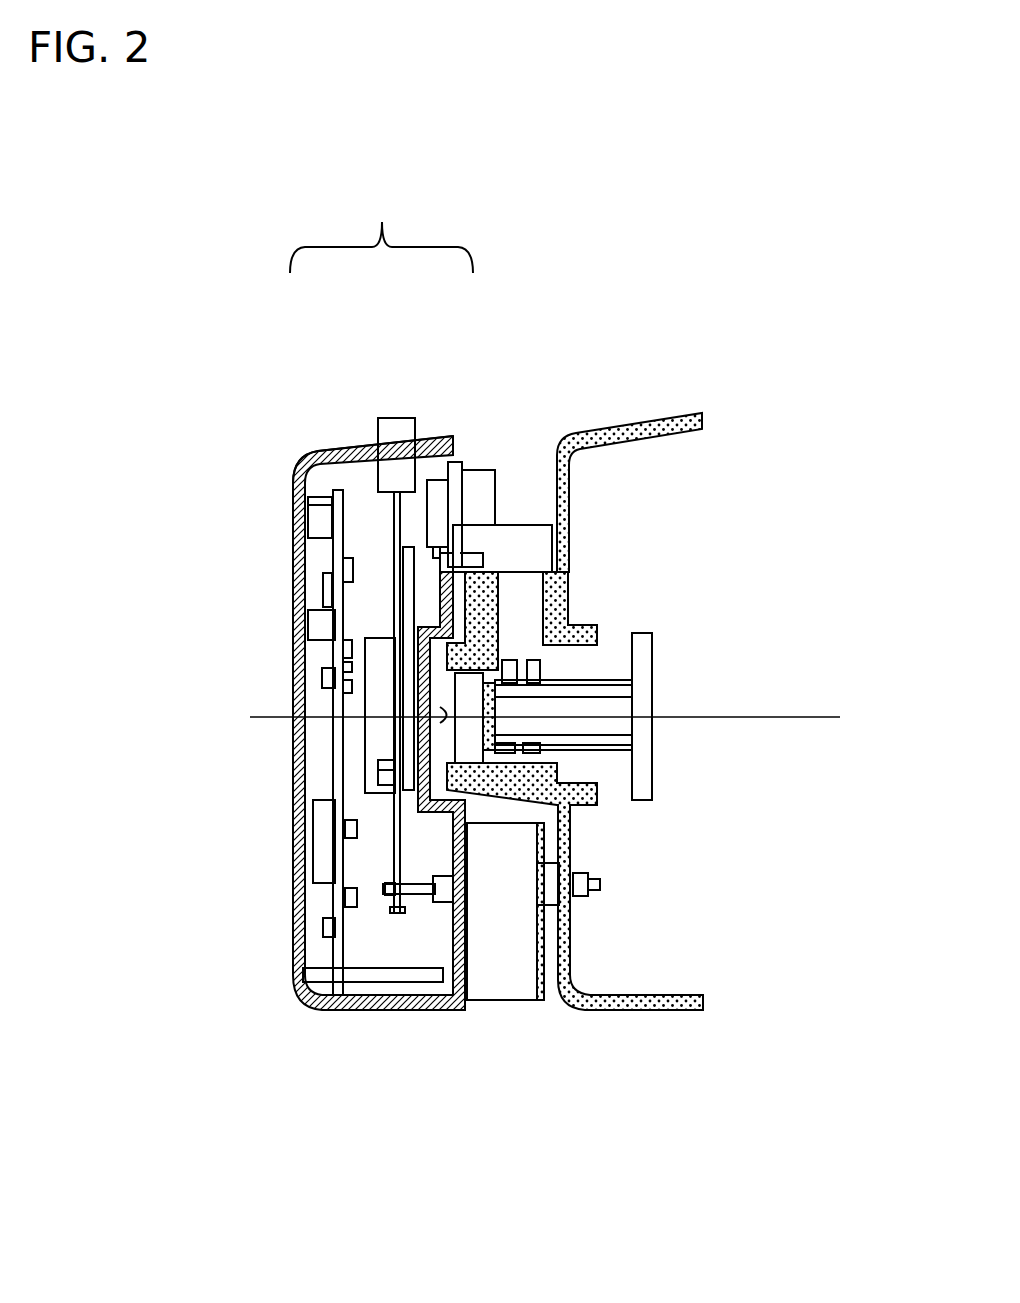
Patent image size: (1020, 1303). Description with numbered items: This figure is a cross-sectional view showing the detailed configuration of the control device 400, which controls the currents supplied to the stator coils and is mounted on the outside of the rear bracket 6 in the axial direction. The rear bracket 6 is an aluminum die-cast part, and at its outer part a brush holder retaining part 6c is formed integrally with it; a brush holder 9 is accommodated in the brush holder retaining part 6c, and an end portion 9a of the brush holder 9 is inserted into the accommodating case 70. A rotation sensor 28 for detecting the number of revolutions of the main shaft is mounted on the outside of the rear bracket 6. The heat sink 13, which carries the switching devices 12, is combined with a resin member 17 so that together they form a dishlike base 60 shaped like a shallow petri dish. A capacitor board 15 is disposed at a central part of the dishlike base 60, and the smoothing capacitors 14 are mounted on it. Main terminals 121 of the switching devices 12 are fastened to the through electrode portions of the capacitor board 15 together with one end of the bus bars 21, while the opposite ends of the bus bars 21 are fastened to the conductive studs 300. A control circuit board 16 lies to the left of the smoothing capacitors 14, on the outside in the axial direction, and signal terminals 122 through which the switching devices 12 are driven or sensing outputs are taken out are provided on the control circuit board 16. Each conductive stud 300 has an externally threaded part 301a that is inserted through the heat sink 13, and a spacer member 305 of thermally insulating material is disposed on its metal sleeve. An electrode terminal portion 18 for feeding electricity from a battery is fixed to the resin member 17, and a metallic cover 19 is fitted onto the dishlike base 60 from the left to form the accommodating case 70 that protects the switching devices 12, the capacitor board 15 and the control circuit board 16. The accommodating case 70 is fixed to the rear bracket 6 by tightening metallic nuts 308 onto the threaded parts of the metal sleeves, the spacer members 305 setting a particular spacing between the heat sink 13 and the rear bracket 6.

The control device 400 is at (400, 205).
The resin member 17 is at (322, 440).
The dishlike base 60 is at (363, 437).
The electrode terminal portion 18 is at (405, 420).
The capacitor board 15 is at (397, 590).
The end portion 9a is at (472, 537).
The brush holder 9 is at (505, 547).
The rear bracket 6 is at (657, 418).
The metallic cover 19 is at (293, 545).
The accommodating case 70 is at (293, 592).
The brush holder retaining part 6c is at (535, 590).
The rotation sensor 28 is at (470, 720).
The smoothing capacitors 14 is at (293, 690).
The main terminals 121 is at (370, 710).
The bus bars 21 is at (413, 787).
The externally threaded part 301a is at (400, 832).
The metallic nuts 308 is at (588, 868).
The control circuit board 16 is at (335, 948).
The signal terminals 122 is at (368, 977).
The switching devices 12 is at (433, 925).
The heat sink 13 is at (492, 1000).
The conductive studs 300 is at (550, 890).
The spacer member 305 is at (553, 893).